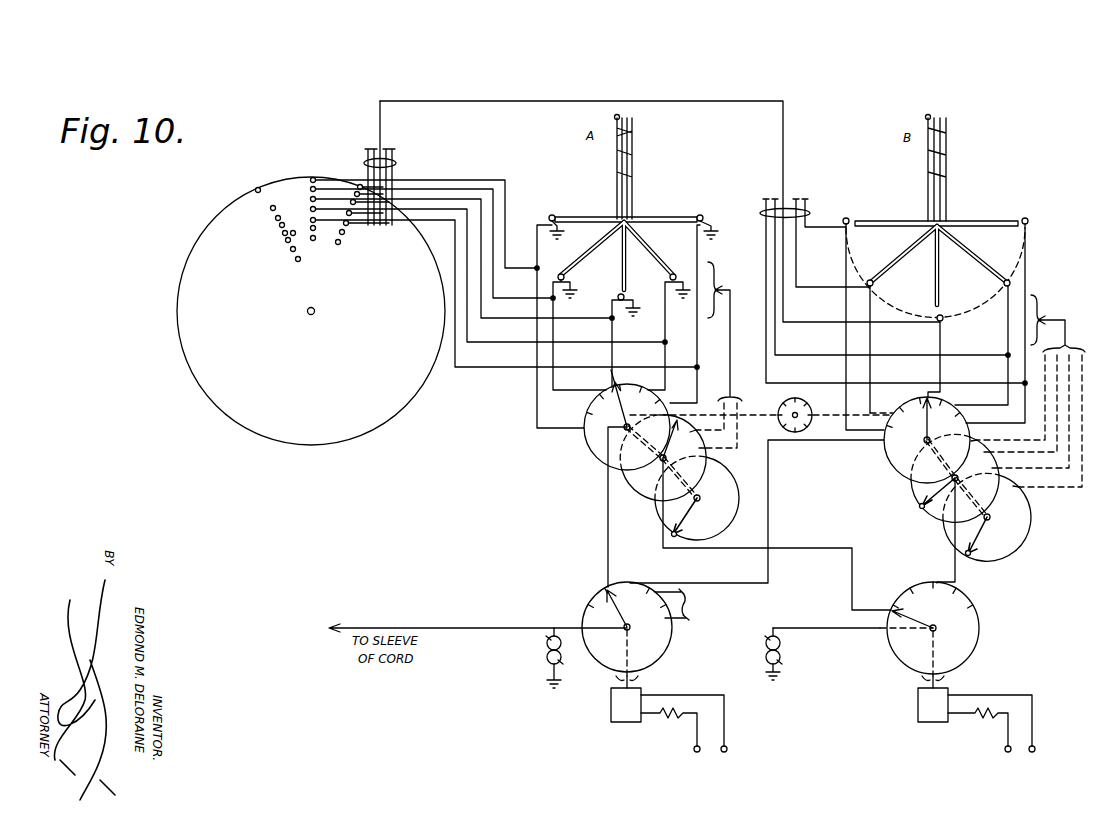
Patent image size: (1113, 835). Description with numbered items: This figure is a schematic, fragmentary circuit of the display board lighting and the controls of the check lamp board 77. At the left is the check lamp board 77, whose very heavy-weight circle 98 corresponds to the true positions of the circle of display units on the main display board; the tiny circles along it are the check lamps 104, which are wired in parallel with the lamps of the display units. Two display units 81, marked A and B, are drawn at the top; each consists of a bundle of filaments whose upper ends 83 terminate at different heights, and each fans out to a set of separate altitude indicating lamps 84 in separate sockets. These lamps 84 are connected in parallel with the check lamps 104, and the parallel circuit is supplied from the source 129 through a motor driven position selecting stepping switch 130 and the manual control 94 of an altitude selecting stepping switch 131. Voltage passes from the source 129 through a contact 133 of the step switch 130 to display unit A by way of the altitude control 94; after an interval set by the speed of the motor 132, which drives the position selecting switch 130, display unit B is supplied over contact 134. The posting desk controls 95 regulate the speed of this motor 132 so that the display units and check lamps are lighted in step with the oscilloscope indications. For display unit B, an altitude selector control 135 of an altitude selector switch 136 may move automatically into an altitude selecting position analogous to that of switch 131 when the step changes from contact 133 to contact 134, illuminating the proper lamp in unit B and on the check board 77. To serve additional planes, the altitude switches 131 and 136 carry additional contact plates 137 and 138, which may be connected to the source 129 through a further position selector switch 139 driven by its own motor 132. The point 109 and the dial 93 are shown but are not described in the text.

The check lamp board 77 is at (196, 388).
The very heavy-weight circle 98 is at (372, 424).
The check lamps 104 is at (313, 182).
The center point of checking circle 109 is at (315, 311).
The display unit 81 is at (639, 204).
The upper ends of filaments 83 is at (633, 128).
The lamps 84 is at (552, 215).
The dial / selector switch 93 is at (592, 414).
The manual control 94 is at (808, 410).
The controls 95 is at (673, 730).
The source 129 is at (545, 650).
The position selecting stepping switch 130 is at (577, 616).
The altitude selecting stepping switch 131 is at (590, 450).
The motor 132 is at (611, 712).
The contact 133 is at (606, 590).
The contact 134 is at (633, 589).
The altitude selector control 135 is at (899, 478).
The altitude selector switch 136 is at (884, 456).
The additional contact plate 137 is at (660, 510).
The additional contact plate 138 is at (940, 532).
The position selector switch 139 is at (968, 620).